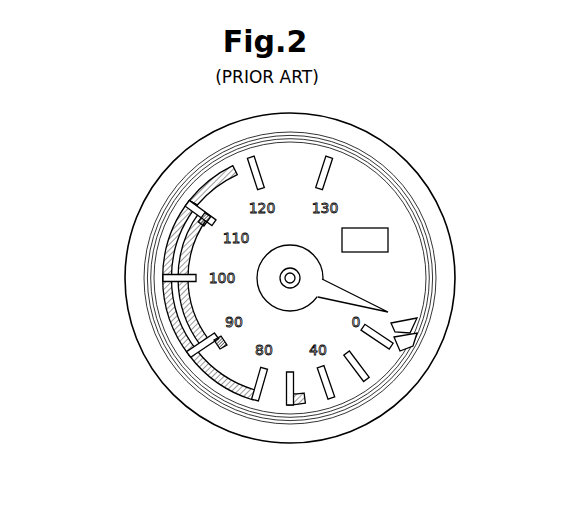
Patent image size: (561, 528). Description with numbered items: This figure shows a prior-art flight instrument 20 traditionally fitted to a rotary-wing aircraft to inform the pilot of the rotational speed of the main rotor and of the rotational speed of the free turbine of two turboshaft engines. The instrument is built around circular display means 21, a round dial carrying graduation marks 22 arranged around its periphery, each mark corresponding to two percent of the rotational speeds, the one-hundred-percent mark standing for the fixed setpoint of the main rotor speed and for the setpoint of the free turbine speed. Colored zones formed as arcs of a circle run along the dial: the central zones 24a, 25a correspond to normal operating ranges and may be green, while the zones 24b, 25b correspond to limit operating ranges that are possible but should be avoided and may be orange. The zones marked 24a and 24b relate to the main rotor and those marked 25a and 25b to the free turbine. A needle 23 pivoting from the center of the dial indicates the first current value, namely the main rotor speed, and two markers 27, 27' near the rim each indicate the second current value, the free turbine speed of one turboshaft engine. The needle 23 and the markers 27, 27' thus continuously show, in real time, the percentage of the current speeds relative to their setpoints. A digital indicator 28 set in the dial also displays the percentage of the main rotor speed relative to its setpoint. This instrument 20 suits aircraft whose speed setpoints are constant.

The flight instrument 20 is at (370, 90).
The circular display means 21 is at (416, 172).
The graduation marks 22 is at (190, 202).
The needle 23 is at (358, 305).
The central zone 24a is at (196, 297).
The limit zone 24b is at (187, 228).
The central zone 25a is at (218, 378).
The limit zone 25b is at (213, 172).
The marker 27 is at (439, 373).
The marker 27' is at (450, 342).
The digital indicator 28 is at (388, 238).